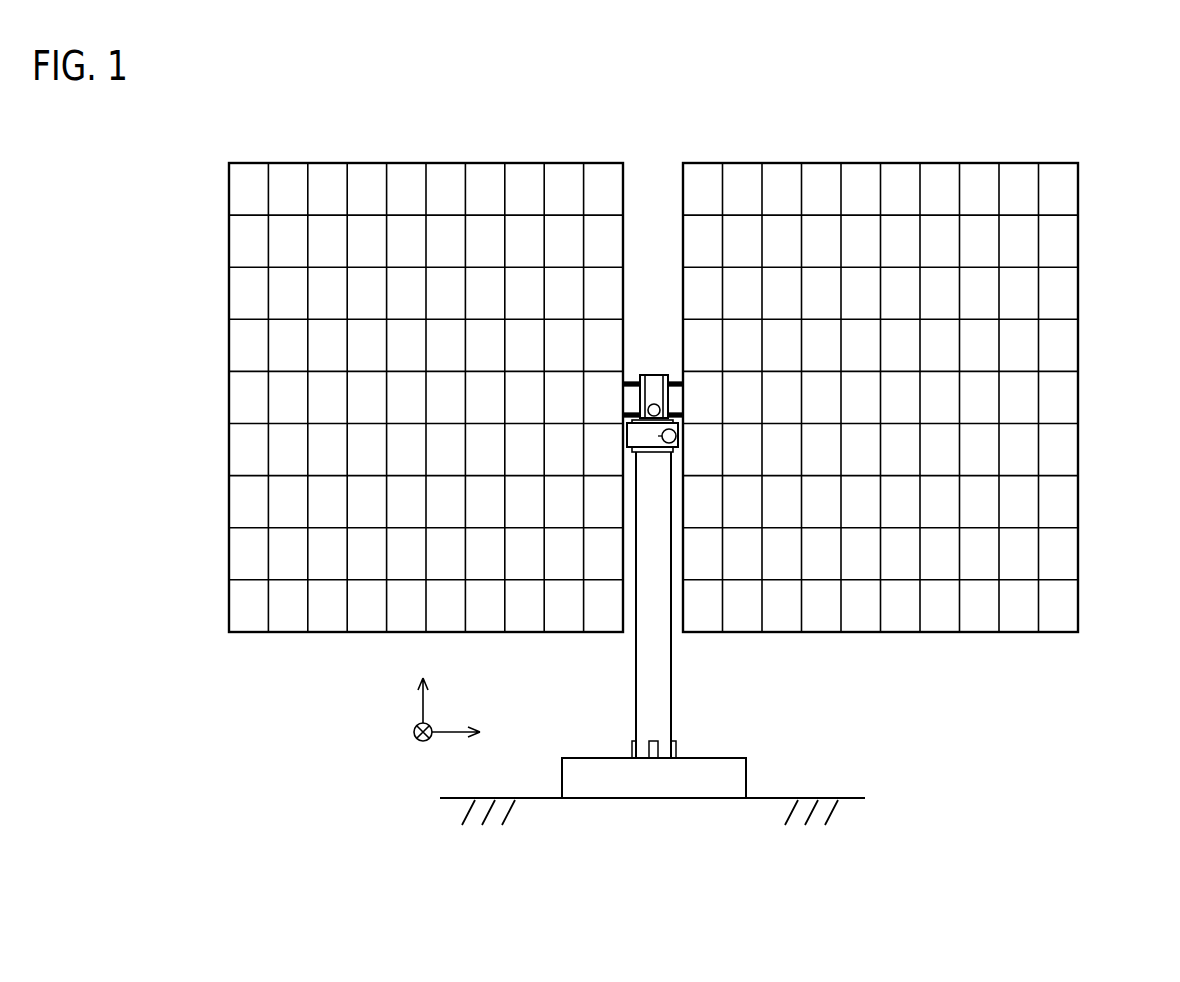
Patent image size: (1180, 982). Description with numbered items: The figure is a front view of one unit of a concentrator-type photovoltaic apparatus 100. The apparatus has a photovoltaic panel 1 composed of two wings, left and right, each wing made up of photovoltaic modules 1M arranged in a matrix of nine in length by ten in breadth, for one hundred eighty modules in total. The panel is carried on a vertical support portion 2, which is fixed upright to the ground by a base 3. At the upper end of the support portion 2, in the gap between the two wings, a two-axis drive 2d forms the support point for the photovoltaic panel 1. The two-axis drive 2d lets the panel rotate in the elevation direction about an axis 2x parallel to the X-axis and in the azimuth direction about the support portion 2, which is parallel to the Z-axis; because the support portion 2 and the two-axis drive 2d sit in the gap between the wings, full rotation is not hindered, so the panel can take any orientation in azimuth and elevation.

The photovoltaic panel 1 is at (740, 162).
The photovoltaic module 1M is at (247, 401).
The support portion 2 is at (671, 685).
The axis 2x is at (631, 382).
The two-axis drive 2d is at (658, 363).
The base 3 is at (730, 758).
The photovoltaic apparatus 100 is at (886, 670).